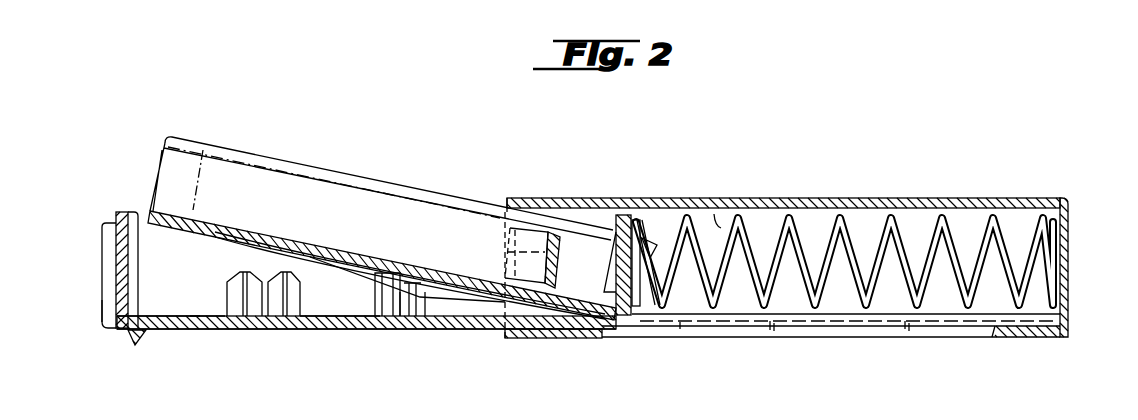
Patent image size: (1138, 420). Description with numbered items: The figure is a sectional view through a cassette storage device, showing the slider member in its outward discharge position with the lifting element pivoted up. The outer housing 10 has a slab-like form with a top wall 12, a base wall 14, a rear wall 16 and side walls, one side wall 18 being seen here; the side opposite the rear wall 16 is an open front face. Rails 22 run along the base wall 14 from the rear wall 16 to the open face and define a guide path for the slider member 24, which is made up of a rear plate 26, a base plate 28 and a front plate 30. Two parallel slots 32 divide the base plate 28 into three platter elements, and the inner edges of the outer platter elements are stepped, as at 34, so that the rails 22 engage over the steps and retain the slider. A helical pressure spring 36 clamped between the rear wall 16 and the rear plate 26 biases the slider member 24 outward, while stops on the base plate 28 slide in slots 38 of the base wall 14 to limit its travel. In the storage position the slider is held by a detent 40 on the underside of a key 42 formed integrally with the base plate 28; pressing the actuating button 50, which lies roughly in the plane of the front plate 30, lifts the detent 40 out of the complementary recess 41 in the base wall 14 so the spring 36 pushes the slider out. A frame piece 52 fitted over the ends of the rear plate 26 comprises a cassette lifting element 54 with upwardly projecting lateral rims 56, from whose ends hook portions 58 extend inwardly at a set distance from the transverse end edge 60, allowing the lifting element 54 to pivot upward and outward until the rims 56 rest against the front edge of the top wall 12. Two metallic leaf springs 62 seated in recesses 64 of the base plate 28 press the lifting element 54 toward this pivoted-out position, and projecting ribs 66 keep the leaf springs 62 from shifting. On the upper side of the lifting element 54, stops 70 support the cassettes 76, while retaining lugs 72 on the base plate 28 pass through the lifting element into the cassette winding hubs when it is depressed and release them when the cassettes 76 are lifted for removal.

The outer housing 10 is at (918, 201).
The top wall 12 is at (838, 199).
The base wall 14 is at (1032, 339).
The rear wall 16 is at (1068, 246).
The side wall 18 is at (716, 220).
The rails 22 is at (838, 323).
The slider member 24 is at (340, 330).
The rear plate 26 is at (622, 214).
The base plate 28 is at (368, 333).
The front plate 30 is at (122, 212).
The slots 32 is at (140, 316).
The steps 34 is at (346, 317).
The helical pressure spring 36 is at (790, 217).
The slots 38 is at (987, 330).
The detent 40 is at (138, 342).
The recess 41 is at (509, 340).
The key 42 is at (105, 305).
The actuating button 50 is at (110, 247).
The frame piece 52 is at (189, 139).
The cassette lifting element 54 is at (255, 227).
The lateral rims 56 is at (367, 202).
The hook portions 58 is at (645, 290).
The transverse end edge 60 is at (624, 323).
The leaf springs 62 is at (311, 264).
The recesses 64 is at (200, 315).
The projecting ribs 66 is at (158, 229).
The stops 70 is at (572, 340).
The retaining lugs 72 is at (280, 302).
The cassettes 76 is at (238, 158).